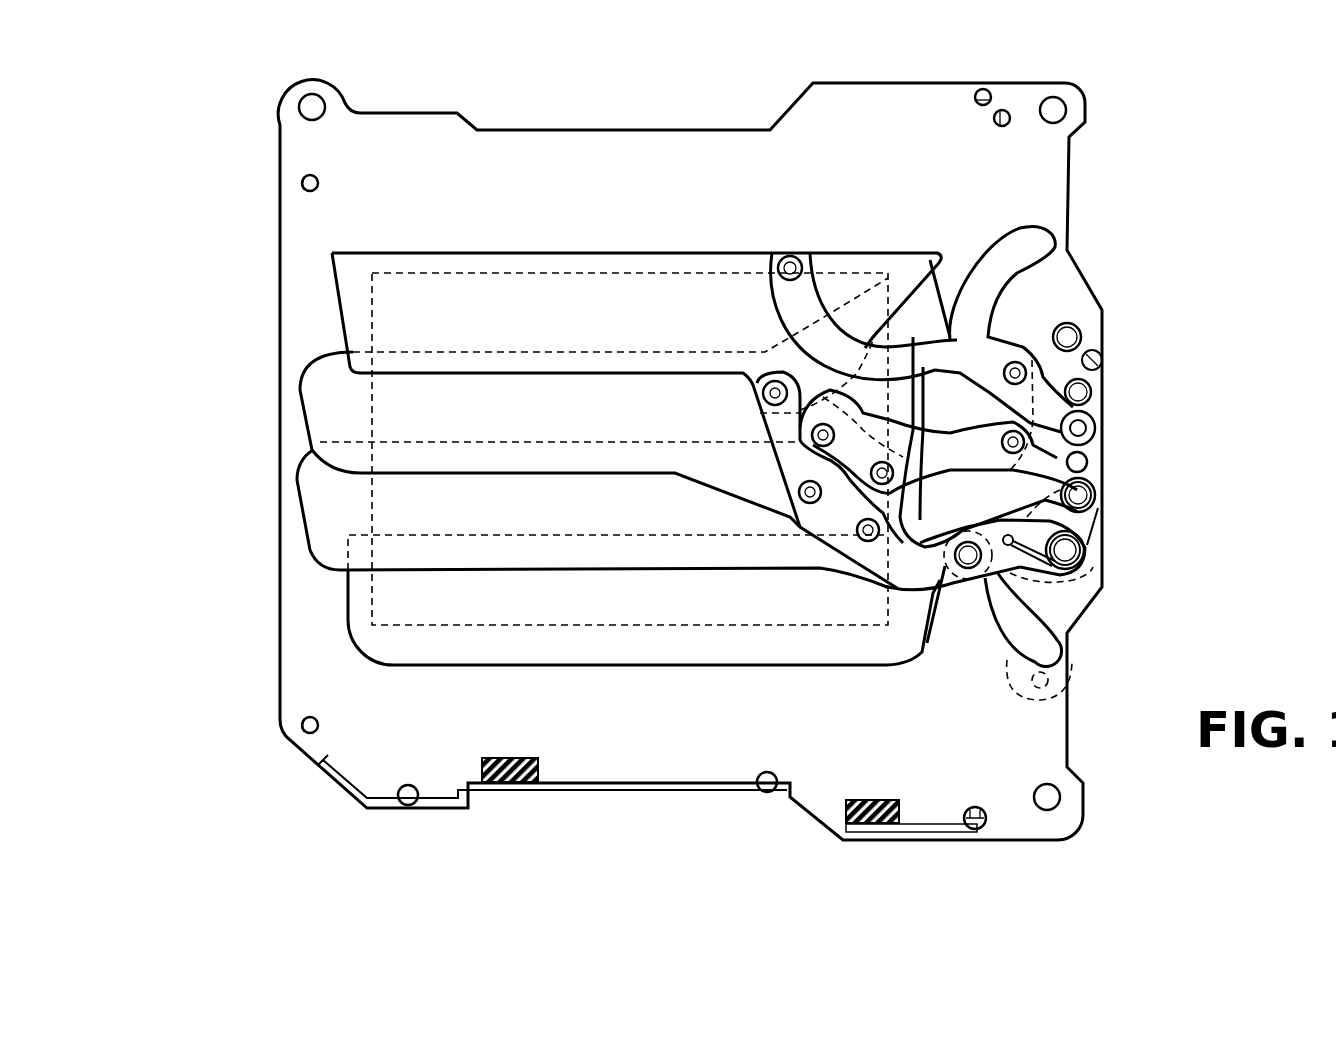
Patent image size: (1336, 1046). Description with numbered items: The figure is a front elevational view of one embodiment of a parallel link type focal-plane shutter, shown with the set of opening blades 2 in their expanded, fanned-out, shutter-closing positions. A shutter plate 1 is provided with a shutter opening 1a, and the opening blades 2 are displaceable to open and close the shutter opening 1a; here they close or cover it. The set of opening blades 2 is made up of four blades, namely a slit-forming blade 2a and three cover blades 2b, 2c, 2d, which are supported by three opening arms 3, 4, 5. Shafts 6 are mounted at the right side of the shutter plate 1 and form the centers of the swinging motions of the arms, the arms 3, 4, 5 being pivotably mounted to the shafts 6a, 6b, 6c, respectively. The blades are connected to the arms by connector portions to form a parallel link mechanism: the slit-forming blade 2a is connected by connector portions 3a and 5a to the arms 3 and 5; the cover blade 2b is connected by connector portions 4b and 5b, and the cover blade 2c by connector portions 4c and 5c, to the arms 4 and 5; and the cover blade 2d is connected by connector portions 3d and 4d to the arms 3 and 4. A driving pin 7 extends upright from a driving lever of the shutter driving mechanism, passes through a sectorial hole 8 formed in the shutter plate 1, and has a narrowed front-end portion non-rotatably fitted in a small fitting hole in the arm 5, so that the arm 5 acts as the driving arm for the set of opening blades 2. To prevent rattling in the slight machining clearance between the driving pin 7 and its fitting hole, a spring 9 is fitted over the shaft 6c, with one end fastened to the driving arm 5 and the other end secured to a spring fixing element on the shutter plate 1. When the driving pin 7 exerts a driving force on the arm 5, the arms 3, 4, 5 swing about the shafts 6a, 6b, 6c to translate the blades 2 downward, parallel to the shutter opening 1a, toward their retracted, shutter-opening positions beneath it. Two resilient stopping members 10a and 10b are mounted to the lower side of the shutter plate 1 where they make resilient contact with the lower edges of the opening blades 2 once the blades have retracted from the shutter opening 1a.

The shutter plate 1 is at (622, 148).
The shutter opening 1a is at (480, 280).
The set of opening blades 2 is at (581, 459).
The slit-forming blade 2a is at (340, 305).
The cover blade 2b is at (320, 398).
The cover blade 2c is at (320, 490).
The cover blade 2d is at (577, 600).
The opening arm 3 is at (1002, 376).
The connector portion 3a is at (790, 258).
The connector portion 3d is at (1020, 366).
The opening arm 4 is at (891, 438).
The connector portion 4b is at (818, 440).
The connector portion 4c is at (878, 478).
The connector portion 4d is at (1008, 438).
The driving arm 5 is at (888, 471).
The connector portion 5a is at (770, 385).
The connector portion 5b is at (805, 495).
The connector portion 5c is at (865, 537).
The shafts 6 is at (1147, 469).
The shaft 6a is at (1087, 425).
The shaft 6b is at (1087, 494).
The shaft 6c is at (1110, 538).
The driving pin 7 is at (967, 570).
The sectorial hole 8 is at (1000, 628).
The spring 9 is at (1040, 572).
The resilient stopping member 10a is at (512, 782).
The resilient stopping member 10b is at (880, 822).